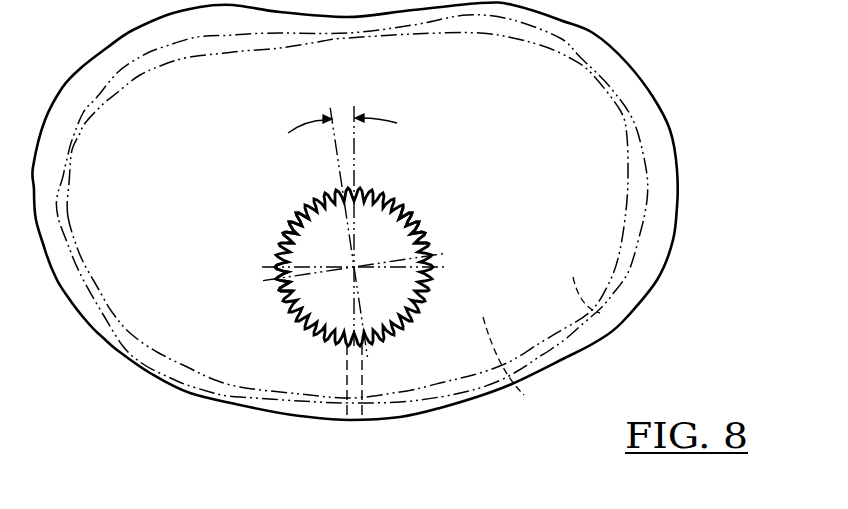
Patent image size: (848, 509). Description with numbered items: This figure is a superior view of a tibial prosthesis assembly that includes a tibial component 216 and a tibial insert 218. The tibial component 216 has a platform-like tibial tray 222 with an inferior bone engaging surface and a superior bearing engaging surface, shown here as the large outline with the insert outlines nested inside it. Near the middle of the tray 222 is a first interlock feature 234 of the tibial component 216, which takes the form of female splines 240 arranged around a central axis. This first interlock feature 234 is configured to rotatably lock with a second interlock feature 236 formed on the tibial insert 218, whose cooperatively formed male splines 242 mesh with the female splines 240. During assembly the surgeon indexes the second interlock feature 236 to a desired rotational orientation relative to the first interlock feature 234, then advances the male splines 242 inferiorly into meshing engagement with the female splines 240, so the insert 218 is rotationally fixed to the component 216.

The tibial insert 218 is at (593, 177).
The tibial component 216 is at (600, 313).
The tibial tray 222 is at (524, 395).
The first interlock feature 234 is at (389, 198).
The second interlock feature 236 is at (426, 228).
The male splines 242 is at (296, 232).
The female splines 240 is at (305, 296).